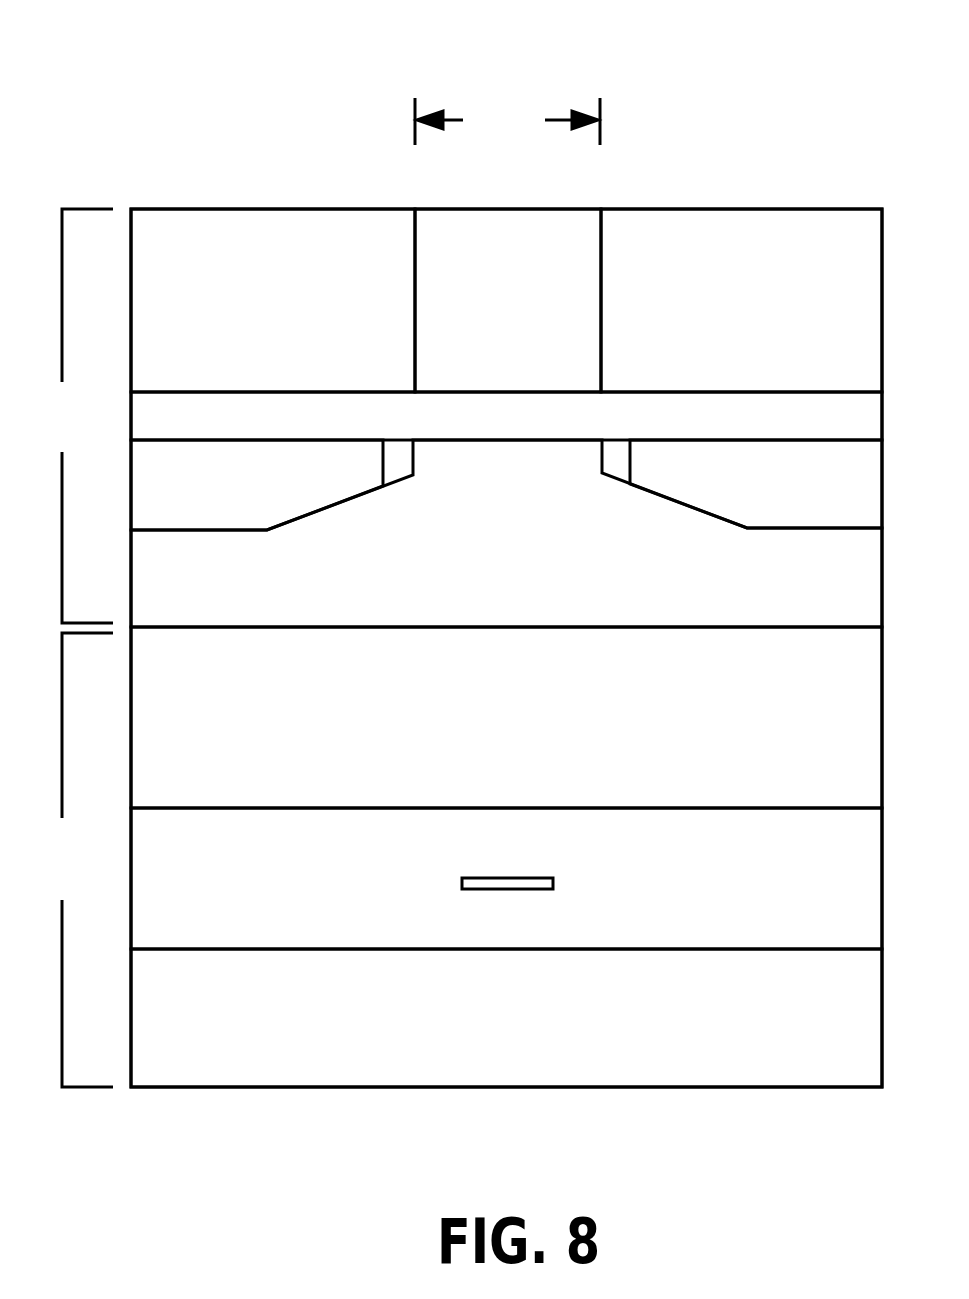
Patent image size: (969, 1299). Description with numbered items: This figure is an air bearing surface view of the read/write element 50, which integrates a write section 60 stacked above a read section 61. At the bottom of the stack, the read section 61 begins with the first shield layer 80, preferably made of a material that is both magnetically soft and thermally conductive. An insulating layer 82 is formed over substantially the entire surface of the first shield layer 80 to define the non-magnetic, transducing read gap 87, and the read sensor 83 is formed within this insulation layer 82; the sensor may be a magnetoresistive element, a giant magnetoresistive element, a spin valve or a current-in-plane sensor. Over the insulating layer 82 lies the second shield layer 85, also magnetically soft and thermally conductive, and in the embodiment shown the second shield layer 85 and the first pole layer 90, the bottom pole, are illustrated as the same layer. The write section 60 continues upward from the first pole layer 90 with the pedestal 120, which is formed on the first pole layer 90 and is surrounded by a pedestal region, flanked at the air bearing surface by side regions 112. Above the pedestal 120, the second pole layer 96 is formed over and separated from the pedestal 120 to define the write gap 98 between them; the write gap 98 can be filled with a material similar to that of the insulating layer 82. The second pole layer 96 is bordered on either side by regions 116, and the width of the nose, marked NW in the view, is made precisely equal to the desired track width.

The read/write element 50 is at (523, 42).
The write section 60 is at (78, 416).
The read section 61 is at (79, 860).
The first shield layer 80 is at (763, 1025).
The insulating layer 82 is at (506, 878).
The read sensor 83 is at (535, 877).
The second shield layer 85 is at (506, 717).
The read gap 87 is at (797, 897).
The first pole layer 90 is at (558, 702).
The second pole layer 96 is at (525, 345).
The write gap 98 is at (765, 427).
The nonmagnetic fill layer beside pedestal 112 is at (267, 498).
The insulation layer beside second pole 116 is at (300, 327).
The pedestal 120 is at (543, 516).